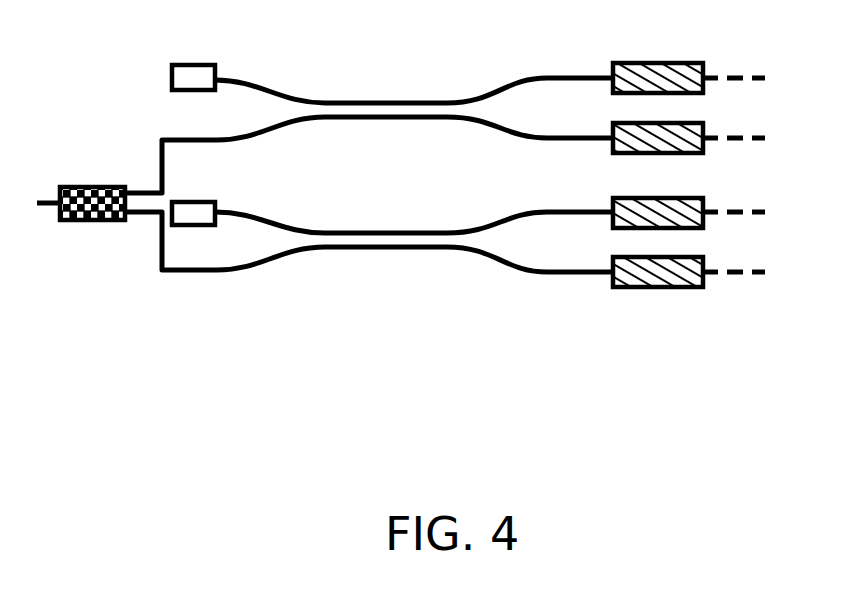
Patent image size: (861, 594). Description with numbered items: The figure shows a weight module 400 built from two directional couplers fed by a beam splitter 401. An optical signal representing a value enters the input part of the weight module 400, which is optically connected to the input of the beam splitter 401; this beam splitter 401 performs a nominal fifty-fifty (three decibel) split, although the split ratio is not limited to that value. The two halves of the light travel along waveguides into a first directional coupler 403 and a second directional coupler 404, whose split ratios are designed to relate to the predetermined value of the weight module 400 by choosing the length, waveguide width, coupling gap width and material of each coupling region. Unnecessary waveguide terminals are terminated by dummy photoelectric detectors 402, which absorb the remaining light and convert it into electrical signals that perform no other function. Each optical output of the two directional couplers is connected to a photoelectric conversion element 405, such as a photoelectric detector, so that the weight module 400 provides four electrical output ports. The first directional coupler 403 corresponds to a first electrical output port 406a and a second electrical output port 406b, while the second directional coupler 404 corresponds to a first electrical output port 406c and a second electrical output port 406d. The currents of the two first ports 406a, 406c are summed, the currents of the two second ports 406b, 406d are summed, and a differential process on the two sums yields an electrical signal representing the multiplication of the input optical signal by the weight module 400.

The weight module 400 is at (455, 340).
The beam splitter 401 is at (90, 232).
The dummy photoelectric detectors 402 is at (196, 47).
The first directional coupler 403 is at (381, 84).
The second directional coupler 404 is at (380, 216).
The photoelectric conversion element 405 is at (653, 49).
The first electrical output port 406a is at (787, 52).
The second electrical output port 406b is at (767, 128).
The first electrical output port 406c is at (773, 221).
The second electrical output port 406d is at (761, 283).